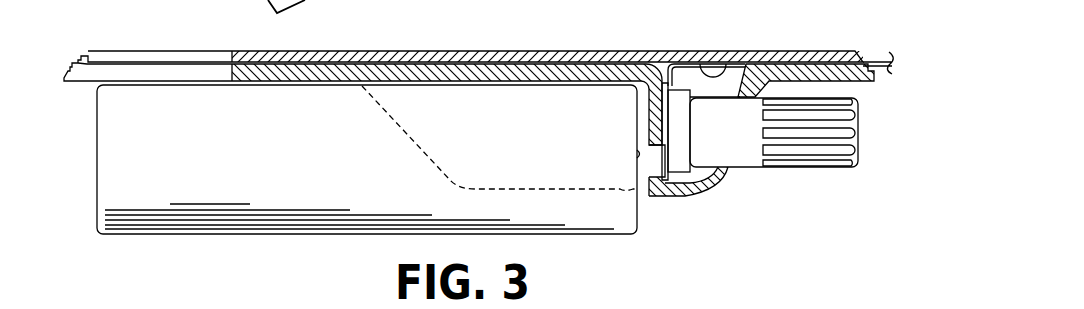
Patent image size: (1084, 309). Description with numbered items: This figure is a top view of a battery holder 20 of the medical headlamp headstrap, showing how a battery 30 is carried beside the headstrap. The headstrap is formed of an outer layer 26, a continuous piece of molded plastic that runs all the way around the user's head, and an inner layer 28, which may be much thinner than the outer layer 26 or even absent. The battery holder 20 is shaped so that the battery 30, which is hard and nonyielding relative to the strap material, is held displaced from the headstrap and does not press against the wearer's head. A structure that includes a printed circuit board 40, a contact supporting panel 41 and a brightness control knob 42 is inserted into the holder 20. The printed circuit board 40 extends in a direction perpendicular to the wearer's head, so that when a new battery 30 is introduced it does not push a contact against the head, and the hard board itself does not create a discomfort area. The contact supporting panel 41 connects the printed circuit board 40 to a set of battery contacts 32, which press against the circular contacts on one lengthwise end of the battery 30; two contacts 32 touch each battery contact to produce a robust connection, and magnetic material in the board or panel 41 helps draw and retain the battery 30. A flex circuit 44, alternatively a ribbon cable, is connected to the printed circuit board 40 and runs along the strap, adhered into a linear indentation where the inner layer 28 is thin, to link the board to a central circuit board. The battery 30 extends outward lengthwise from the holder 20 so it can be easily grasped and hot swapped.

The battery holder 20 is at (478, 72).
The outer layer 26 is at (300, 83).
The inner layer 28 is at (393, 50).
The battery 30 is at (158, 236).
The battery contacts 32 is at (640, 160).
The printed circuit board 40 is at (668, 133).
The contact supporting panel 41 is at (667, 198).
The brightness control knob 42 is at (822, 170).
The flex circuit 44 is at (731, 67).